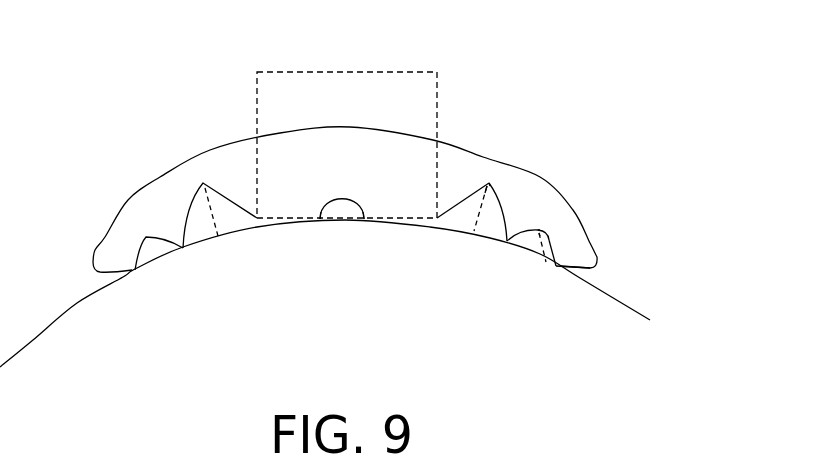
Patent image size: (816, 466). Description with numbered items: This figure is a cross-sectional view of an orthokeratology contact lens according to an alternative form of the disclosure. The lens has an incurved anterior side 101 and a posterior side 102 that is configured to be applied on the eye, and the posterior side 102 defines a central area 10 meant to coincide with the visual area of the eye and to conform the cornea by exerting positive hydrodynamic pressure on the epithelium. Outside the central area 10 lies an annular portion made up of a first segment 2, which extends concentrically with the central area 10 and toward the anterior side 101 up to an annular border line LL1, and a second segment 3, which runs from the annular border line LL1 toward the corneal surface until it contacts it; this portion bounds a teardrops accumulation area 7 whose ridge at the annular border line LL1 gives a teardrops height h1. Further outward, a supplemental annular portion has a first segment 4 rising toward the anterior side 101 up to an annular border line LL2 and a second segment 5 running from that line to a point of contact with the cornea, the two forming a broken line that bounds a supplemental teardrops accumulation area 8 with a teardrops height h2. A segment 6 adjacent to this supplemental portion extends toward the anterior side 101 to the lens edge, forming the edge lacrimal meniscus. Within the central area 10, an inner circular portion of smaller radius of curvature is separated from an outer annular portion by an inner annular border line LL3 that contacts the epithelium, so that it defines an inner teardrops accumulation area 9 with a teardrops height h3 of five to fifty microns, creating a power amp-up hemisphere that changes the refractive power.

The incurved anterior side 101 is at (210, 152).
The posterior side 102 is at (283, 231).
The central area 10 is at (347, 72).
The first segment 2 is at (463, 197).
The second segment 3 is at (505, 205).
The first segment 4 is at (546, 232).
The second segment 5 is at (557, 258).
The segment 6 is at (556, 268).
The teardrops accumulation area 7 is at (489, 228).
The supplemental teardrops accumulation area 8 is at (538, 238).
The inner teardrops accumulation area 9 is at (342, 220).
The teardrops height h1 is at (475, 215).
The teardrops height h2 is at (540, 233).
The teardrops height h3 is at (333, 222).
The annular border line LL1 is at (489, 183).
The annular border line LL2 is at (549, 236).
The inner annular border line LL3 is at (363, 221).